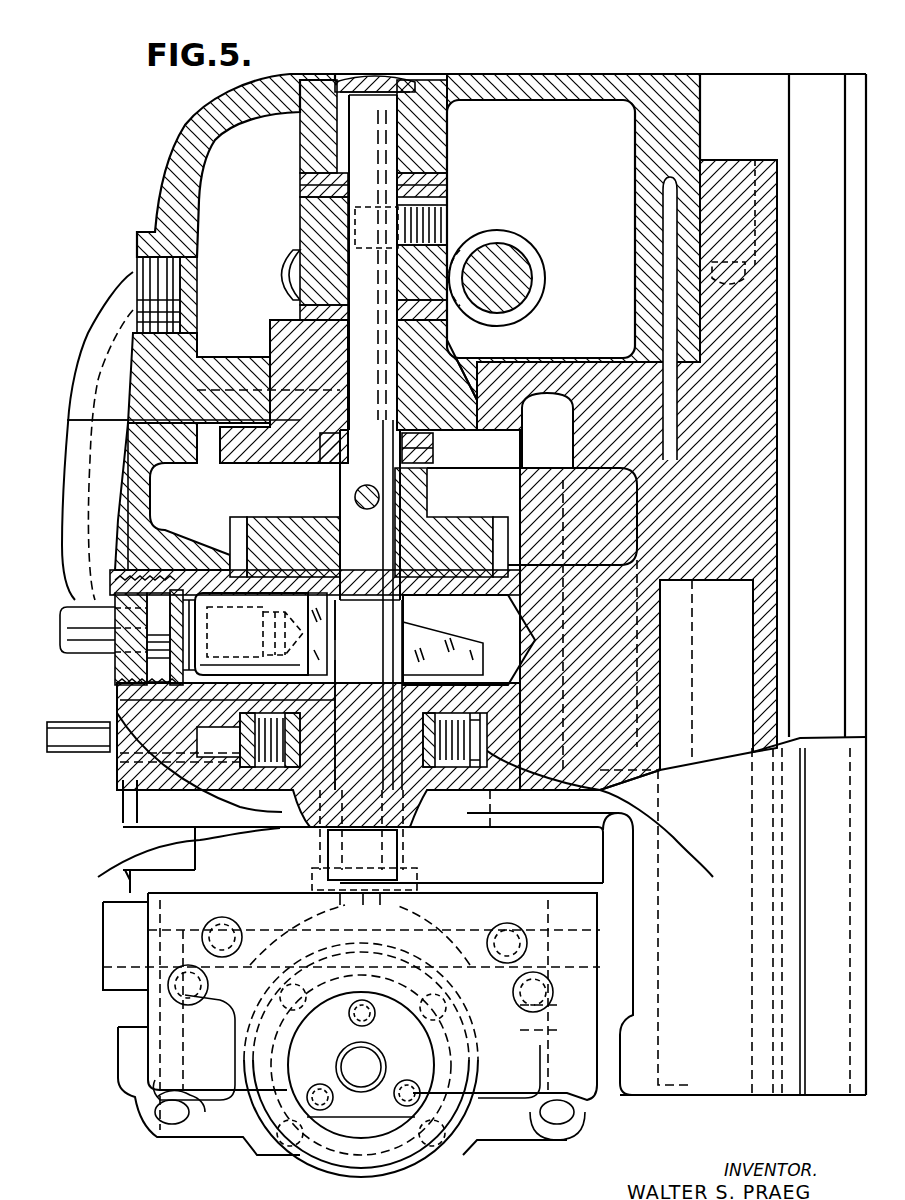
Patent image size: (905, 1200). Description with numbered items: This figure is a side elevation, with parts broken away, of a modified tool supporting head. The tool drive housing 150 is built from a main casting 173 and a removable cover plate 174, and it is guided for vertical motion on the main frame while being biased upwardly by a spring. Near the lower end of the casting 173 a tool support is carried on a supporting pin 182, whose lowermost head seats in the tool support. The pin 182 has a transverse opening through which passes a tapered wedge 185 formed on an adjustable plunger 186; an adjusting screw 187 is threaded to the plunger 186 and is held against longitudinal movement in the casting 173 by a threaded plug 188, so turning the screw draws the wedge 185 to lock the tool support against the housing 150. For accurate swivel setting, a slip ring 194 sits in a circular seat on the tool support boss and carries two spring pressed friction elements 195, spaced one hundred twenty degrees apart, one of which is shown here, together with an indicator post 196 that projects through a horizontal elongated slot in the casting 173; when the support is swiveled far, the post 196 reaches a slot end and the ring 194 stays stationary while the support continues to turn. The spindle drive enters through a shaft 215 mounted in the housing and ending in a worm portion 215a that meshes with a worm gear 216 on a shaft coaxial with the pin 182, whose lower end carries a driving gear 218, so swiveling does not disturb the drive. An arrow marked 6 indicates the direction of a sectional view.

The section line 6-6 / shaft cap 6 is at (372, 1199).
The tool drive housing 150 is at (56, 496).
The main casting 173 is at (123, 567).
The removable cover plate 174 is at (170, 167).
The supporting pin 182 is at (405, 605).
The tapered wedge 185 is at (443, 640).
The adjustable plunger 186 is at (118, 698).
The adjusting screw 187 is at (123, 647).
The threaded plug 188 is at (130, 667).
The slip ring 194 is at (370, 930).
The spring pressed friction elements 195 is at (612, 487).
The indicator post 196 is at (100, 743).
The shaft 215 is at (512, 268).
The worm portion 215a is at (537, 295).
The worm gear 216 is at (285, 285).
The driving gear 218 is at (470, 525).